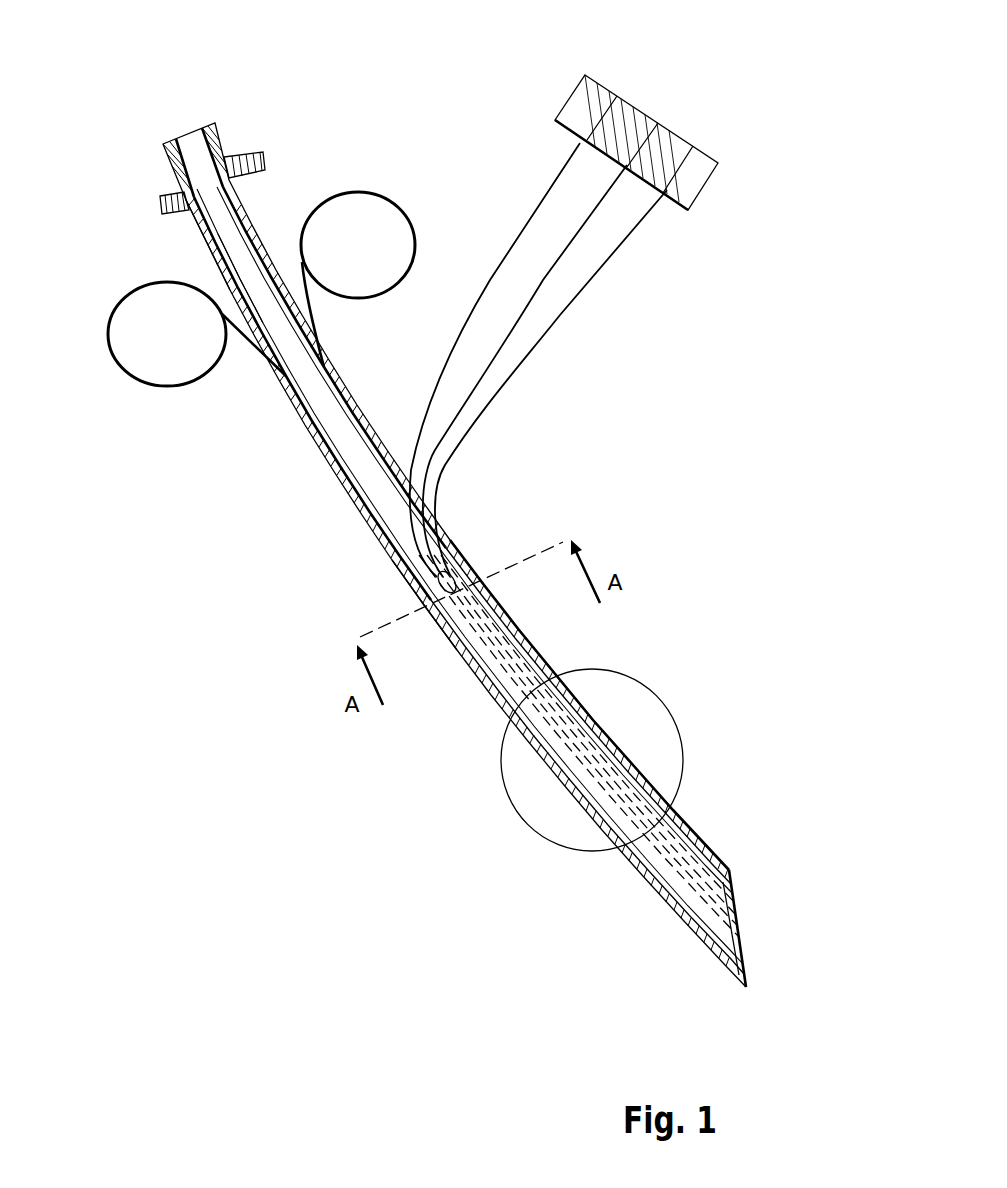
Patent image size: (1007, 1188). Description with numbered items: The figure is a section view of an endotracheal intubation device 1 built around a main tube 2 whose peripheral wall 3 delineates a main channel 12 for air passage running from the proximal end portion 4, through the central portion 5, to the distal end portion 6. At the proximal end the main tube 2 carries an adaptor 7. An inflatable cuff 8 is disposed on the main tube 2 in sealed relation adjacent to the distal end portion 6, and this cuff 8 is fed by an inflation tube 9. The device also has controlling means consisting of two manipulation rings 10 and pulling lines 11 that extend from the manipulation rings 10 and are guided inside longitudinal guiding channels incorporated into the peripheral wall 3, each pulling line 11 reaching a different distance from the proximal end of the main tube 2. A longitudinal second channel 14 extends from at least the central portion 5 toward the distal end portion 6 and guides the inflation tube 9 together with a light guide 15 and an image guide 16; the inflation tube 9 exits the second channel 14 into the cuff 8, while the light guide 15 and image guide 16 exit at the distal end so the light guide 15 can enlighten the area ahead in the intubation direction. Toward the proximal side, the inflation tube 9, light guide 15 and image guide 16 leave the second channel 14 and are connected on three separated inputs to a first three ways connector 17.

The endotracheal intubation device 1 is at (709, 520).
The main tube 2 is at (506, 616).
The peripheral wall 3 is at (272, 214).
The proximal end portion 4 is at (170, 233).
The central portion 5 is at (374, 598).
The distal end portion 6 is at (699, 968).
The adaptor 7 is at (251, 132).
The cuff 8 is at (541, 796).
The inflation tube 9 is at (575, 741).
The manipulation rings 10 is at (381, 202).
The pulling lines 11 is at (297, 439).
The main channel 12 is at (247, 268).
The second channel 14 is at (725, 862).
The light guide 15 is at (735, 905).
The image guide 16 is at (680, 915).
The first three ways connector 17 is at (563, 100).